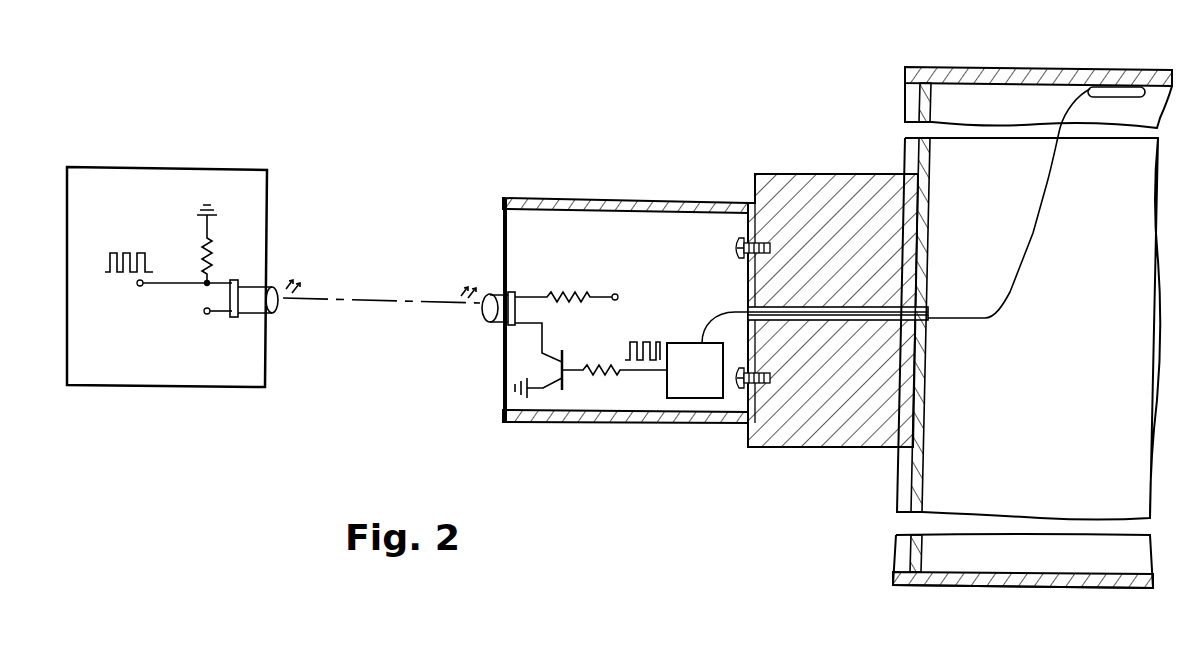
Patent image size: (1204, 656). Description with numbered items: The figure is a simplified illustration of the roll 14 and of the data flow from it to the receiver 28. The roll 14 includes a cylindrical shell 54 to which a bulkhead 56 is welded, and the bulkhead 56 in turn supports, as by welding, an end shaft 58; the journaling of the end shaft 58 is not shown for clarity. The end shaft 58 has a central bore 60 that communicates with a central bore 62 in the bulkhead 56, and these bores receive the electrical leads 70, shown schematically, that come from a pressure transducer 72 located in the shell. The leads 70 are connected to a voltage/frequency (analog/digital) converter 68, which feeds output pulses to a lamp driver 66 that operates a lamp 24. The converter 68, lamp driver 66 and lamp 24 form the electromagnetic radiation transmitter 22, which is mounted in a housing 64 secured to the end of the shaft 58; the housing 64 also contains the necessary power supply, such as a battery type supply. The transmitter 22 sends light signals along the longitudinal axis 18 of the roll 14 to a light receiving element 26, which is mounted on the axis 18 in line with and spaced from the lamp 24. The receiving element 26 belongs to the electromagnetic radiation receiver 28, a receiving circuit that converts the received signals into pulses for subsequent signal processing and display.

The roll 14 is at (1019, 303).
The longitudinal axis 18 is at (401, 303).
The electromagnetic radiation transmitter 22 is at (604, 288).
The lamp 24 is at (494, 294).
The light receiving element 26 is at (273, 313).
The electromagnetic radiation receiver 28 is at (175, 254).
The cylindrical shell 54 is at (998, 68).
The bulkhead 56 is at (931, 164).
The end shaft 58 is at (848, 291).
The central bore 60 is at (810, 307).
The central bore 62 is at (928, 313).
The housing 64 is at (683, 199).
The lamp driver 66 is at (590, 328).
The voltage/frequency converter 68 is at (678, 343).
The electrical leads 70 is at (1033, 239).
The pressure transducer 72 is at (1125, 97).